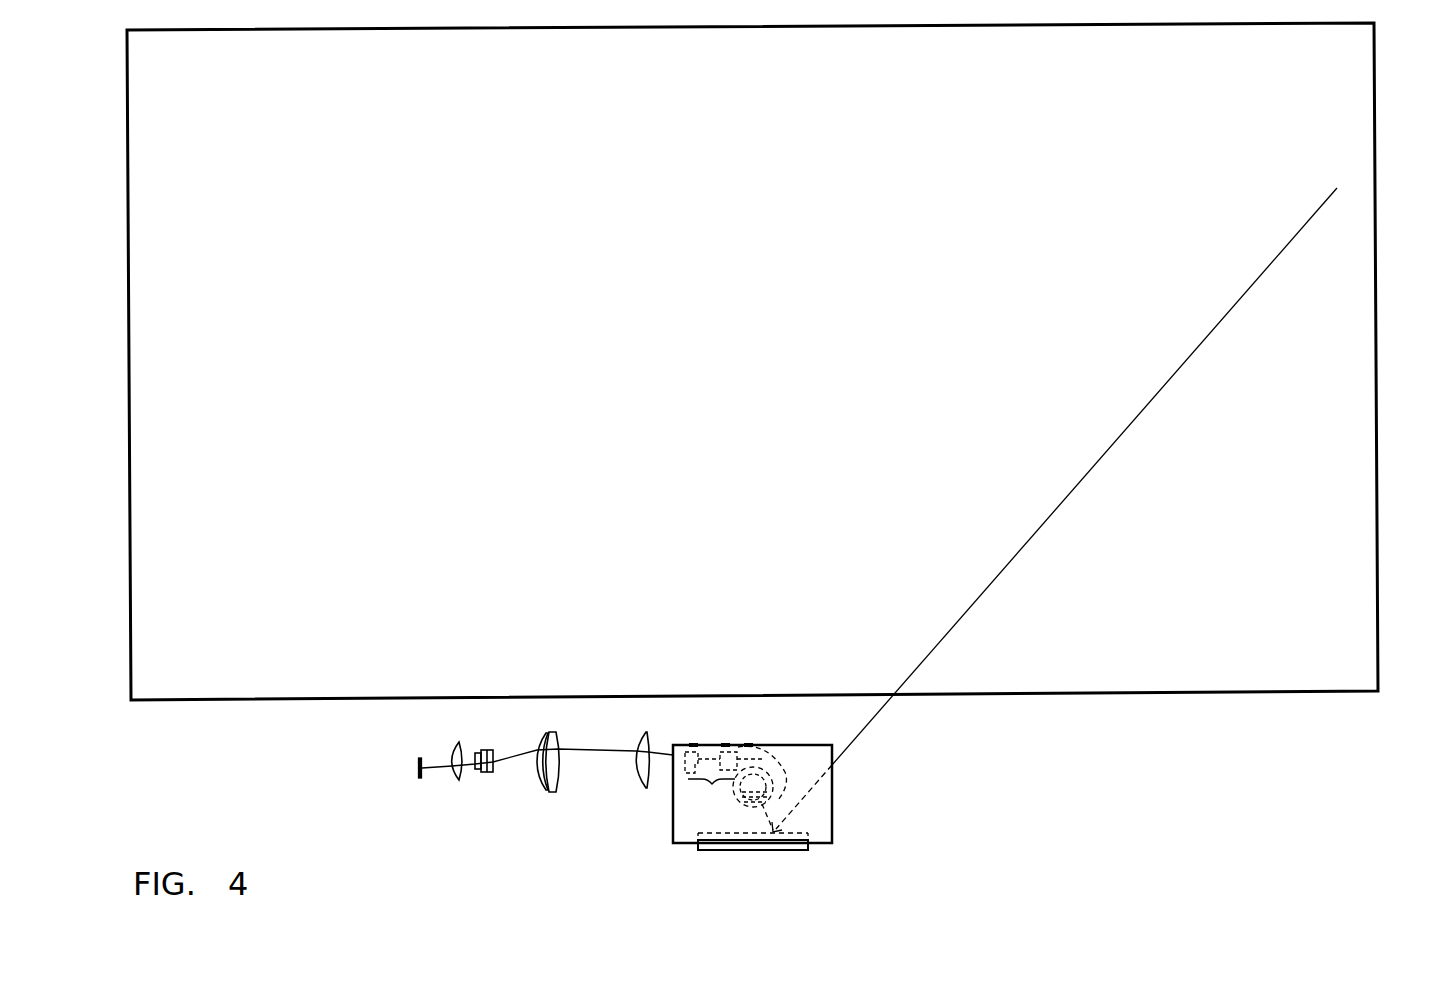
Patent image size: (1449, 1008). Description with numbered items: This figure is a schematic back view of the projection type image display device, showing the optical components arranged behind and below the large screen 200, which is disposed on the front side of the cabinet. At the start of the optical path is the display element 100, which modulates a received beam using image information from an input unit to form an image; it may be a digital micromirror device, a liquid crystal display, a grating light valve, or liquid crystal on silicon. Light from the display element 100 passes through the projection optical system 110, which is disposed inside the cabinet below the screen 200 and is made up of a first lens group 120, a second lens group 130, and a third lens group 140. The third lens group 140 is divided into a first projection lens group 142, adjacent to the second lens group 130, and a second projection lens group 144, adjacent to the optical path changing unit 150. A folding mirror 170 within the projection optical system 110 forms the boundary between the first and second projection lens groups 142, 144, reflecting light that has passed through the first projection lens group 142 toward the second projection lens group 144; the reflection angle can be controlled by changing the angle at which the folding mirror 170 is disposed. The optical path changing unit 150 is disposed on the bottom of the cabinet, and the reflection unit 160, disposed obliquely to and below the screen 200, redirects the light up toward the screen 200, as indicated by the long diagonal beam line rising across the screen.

The display element 100 is at (420, 778).
The projection optical system 110 is at (450, 712).
The first lens group 120 is at (497, 782).
The second lens group 130 is at (537, 793).
The third lens group 140 is at (709, 836).
The first projection lens group 142 is at (702, 782).
The second projection lens group 144 is at (739, 816).
The optical path changing unit 150 is at (791, 851).
The reflection unit 160 is at (833, 842).
The folding mirror 170 is at (750, 752).
The screen 200 is at (1362, 108).